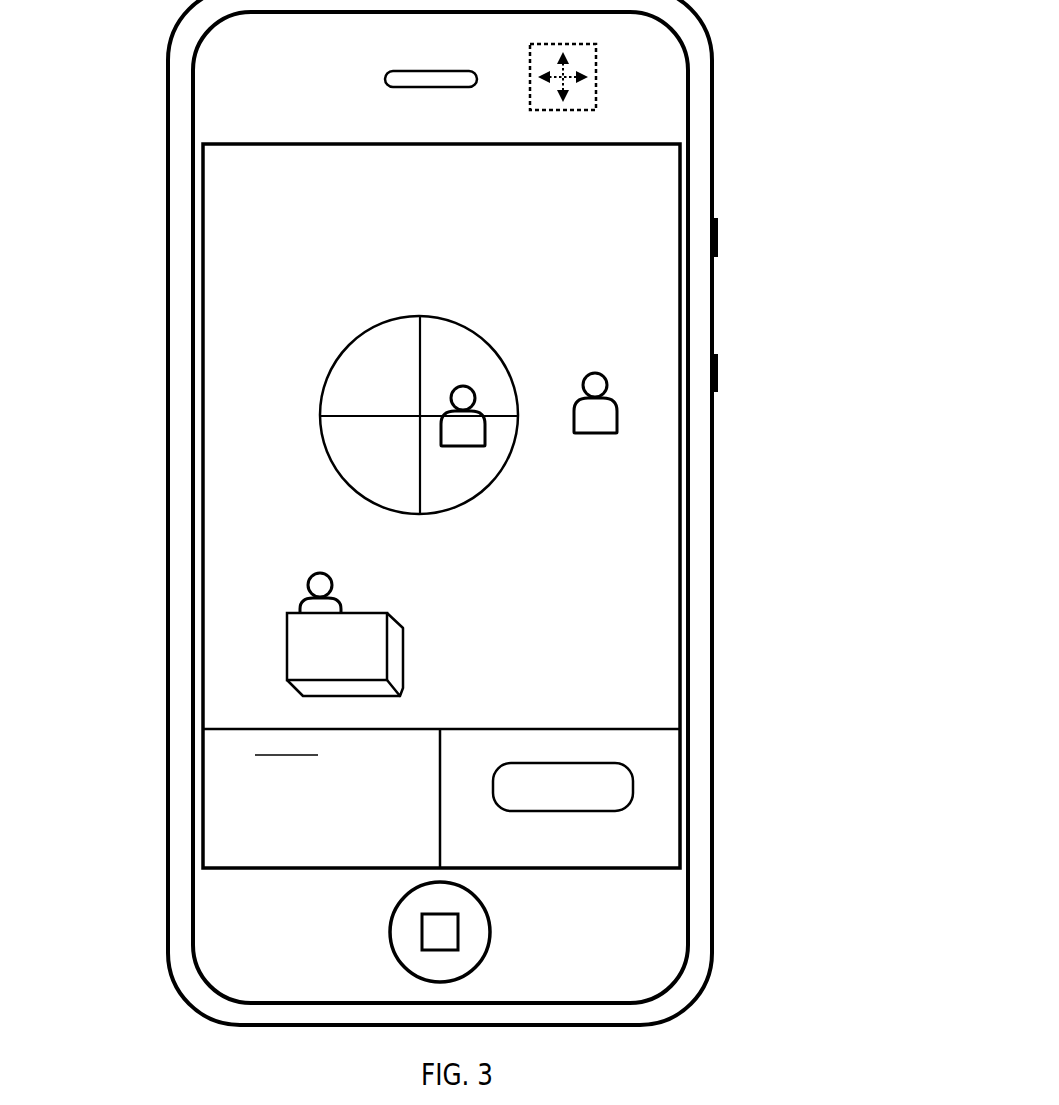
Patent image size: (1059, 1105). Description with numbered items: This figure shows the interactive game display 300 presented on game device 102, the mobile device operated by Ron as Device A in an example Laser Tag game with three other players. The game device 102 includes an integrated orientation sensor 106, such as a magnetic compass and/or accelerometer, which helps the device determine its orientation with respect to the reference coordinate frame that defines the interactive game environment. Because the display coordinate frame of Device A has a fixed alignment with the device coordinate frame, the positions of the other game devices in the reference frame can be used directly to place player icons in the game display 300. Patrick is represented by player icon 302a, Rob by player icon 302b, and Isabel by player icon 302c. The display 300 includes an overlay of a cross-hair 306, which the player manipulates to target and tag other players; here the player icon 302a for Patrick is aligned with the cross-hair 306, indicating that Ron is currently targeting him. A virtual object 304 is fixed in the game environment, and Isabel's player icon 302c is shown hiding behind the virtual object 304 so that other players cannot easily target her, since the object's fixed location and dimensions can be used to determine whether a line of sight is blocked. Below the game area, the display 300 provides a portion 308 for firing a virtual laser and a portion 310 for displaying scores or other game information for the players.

The game device 102 is at (675, 1010).
The orientation sensor 106 is at (596, 71).
The interactive game display 300 is at (597, 595).
The player icon 302a is at (474, 389).
The player icon 302b is at (598, 434).
The player icon 302c is at (333, 572).
The virtual object 304 is at (403, 680).
The cross-hair 306 is at (487, 494).
The portion for firing a virtual laser 308 is at (650, 761).
The portion for displaying scores 310 is at (238, 778).